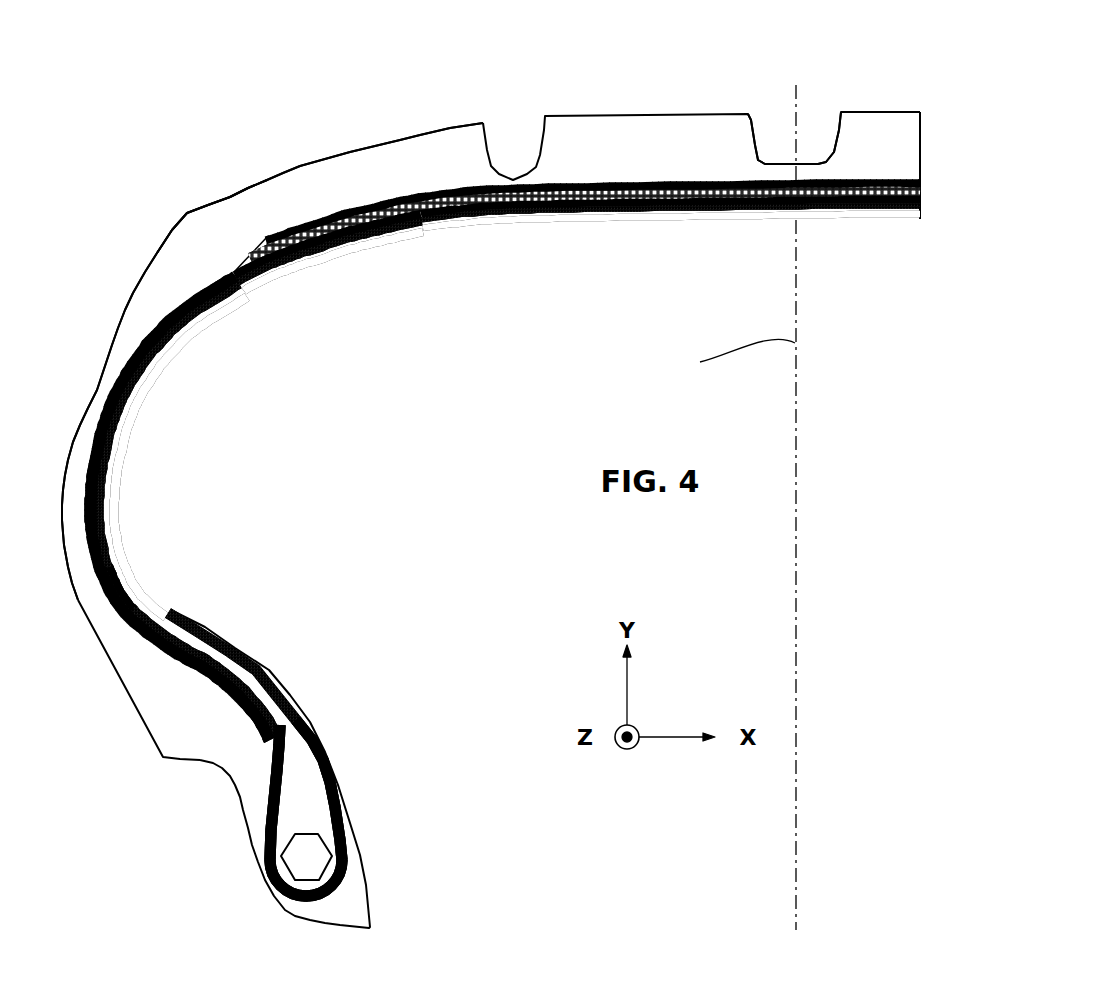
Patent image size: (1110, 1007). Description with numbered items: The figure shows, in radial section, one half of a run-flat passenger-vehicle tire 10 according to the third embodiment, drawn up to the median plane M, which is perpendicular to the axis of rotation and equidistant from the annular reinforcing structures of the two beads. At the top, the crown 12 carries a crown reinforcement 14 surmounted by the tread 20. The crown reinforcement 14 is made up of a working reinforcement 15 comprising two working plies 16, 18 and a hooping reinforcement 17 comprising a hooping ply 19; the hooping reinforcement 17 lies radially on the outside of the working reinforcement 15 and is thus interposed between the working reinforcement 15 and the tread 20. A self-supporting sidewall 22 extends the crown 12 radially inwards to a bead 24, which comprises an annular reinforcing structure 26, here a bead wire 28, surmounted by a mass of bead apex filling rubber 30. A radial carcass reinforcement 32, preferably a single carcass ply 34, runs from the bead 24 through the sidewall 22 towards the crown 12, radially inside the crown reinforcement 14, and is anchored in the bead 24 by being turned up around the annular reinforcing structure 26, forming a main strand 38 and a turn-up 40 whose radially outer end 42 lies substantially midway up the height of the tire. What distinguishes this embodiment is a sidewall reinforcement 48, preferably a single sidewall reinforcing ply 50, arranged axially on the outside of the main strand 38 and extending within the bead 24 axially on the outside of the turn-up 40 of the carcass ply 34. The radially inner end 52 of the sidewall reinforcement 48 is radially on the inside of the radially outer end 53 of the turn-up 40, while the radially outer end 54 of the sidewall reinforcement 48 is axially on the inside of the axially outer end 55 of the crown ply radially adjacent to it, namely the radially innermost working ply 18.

The tire 10 is at (178, 113).
The crown 12 is at (632, 145).
The crown reinforcement 14 is at (730, 132).
The working reinforcement 15 is at (226, 216).
The working ply 16 is at (232, 270).
The hooping reinforcement 17 is at (393, 183).
The working ply 18 is at (196, 216).
The hooping ply 19 is at (327, 220).
The tread 20 is at (415, 132).
The sidewall 22 is at (97, 390).
The bead 24 is at (360, 870).
The annular reinforcing structure 26 is at (352, 892).
The bead wire 28 is at (300, 857).
The bead apex filling rubber 30 is at (317, 818).
The carcass reinforcement 32 is at (124, 333).
The carcass ply 34 is at (100, 472).
The main strand 38 is at (333, 790).
The turn-up 40 is at (277, 782).
The radially outer end of the turn-up 42 is at (175, 684).
The sidewall reinforcement 48 is at (71, 516).
The sidewall reinforcing ply 50 is at (100, 600).
The radially inner end of the sidewall reinforcement 52 is at (267, 743).
The radially outer end of the turn-up 53 is at (213, 660).
The radially outer end of the sidewall reinforcement 54 is at (345, 248).
The axially outer end of the crown ply 55 is at (222, 277).
The median plane M is at (729, 360).